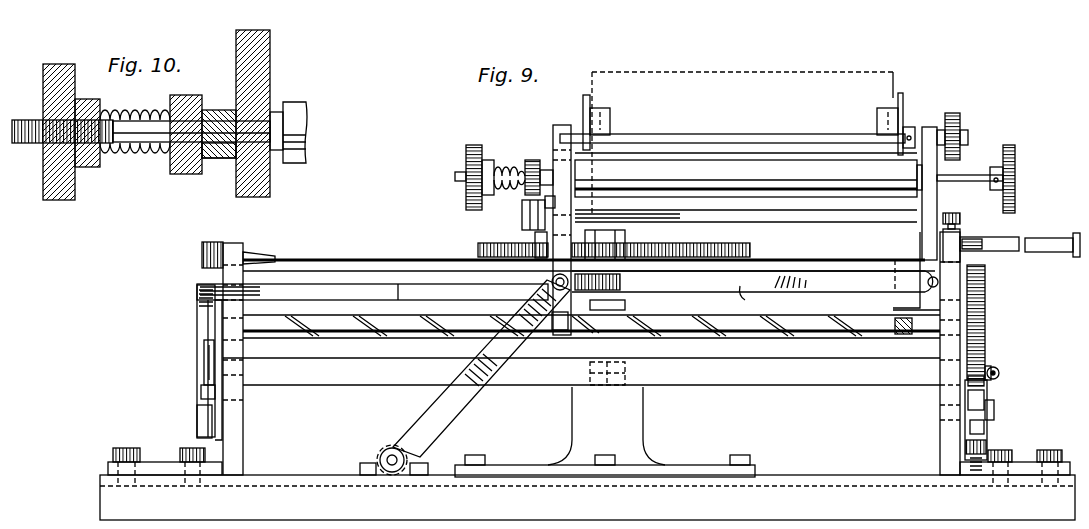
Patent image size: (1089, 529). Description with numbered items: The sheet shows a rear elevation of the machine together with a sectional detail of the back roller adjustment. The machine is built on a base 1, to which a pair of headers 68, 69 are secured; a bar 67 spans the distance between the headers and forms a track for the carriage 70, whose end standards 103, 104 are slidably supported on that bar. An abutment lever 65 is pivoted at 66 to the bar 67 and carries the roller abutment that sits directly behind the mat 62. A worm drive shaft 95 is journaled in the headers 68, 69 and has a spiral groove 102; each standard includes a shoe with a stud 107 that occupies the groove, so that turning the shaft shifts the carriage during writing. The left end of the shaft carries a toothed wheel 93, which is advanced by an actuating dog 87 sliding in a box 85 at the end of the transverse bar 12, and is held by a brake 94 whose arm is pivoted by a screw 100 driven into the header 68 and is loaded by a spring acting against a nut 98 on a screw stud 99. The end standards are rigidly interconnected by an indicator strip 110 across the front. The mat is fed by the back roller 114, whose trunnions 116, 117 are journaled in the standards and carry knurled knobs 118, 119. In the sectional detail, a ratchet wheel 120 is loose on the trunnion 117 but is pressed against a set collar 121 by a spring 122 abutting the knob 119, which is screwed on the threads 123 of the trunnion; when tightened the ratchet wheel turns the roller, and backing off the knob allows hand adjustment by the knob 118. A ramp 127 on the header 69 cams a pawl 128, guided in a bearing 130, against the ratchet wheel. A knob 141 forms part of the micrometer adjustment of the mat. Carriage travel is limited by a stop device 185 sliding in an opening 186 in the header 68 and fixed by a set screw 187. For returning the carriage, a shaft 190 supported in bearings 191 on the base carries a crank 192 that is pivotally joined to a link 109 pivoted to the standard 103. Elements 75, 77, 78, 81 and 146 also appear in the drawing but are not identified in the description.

In FIG. 9, the base 1 is at (843, 479).
In FIG. 9, the transverse bar 12 is at (830, 386).
In FIG. 9, the mat 62 is at (895, 76).
In FIG. 9, the abutment lever 65 is at (452, 297).
In FIG. 9, the pivot 66 is at (480, 249).
In FIG. 9, the bar 67 is at (803, 270).
In FIG. 9, the header 68 is at (940, 410).
In FIG. 9, the header 69 is at (243, 405).
In FIG. 9, the carriage 70 is at (808, 134).
In FIG. 9, the plate 75 is at (197, 329).
In FIG. 9, the lever 77 is at (197, 424).
In FIG. 9, the pawl 78 is at (201, 402).
In FIG. 9, the spring 81 is at (204, 380).
In FIG. 9, the box 85 is at (1000, 372).
In FIG. 9, the actuating dog 87 is at (995, 367).
In FIG. 9, the toothed wheel 93 is at (986, 293).
In FIG. 9, the brake 94 is at (990, 400).
In FIG. 9, the worm drive shaft 95 is at (705, 337).
In FIG. 9, the nut 98 is at (988, 446).
In FIG. 9, the screw stud 99 is at (988, 432).
In FIG. 9, the screw 100 is at (995, 416).
In FIG. 9, the spiral groove 102 is at (700, 315).
In FIG. 9, the end standard 103 is at (922, 242).
In FIG. 10, the end standard 104 is at (272, 55).
In FIG. 9, the end standard 104 is at (556, 125).
In FIG. 9, the stud 107 is at (562, 331).
In FIG. 9, the link 109 is at (756, 297).
In FIG. 9, the strip 110 is at (712, 224).
In FIG. 10, the back roller 114 is at (298, 104).
In FIG. 9, the back roller 114 is at (688, 162).
In FIG. 9, the trunnion 116 is at (967, 182).
In FIG. 10, the trunnion 117 is at (222, 110).
In FIG. 9, the trunnion 117 is at (460, 174).
In FIG. 9, the knurled knob 118 is at (1012, 170).
In FIG. 10, the knurled knob 119 is at (60, 66).
In FIG. 9, the knurled knob 119 is at (476, 145).
In FIG. 10, the ratchet wheel 120 is at (185, 96).
In FIG. 9, the ratchet wheel 120 is at (530, 160).
In FIG. 10, the set collar 121 is at (225, 160).
In FIG. 10, the spring 122 is at (140, 110).
In FIG. 9, the spring 122 is at (510, 167).
In FIG. 10, the threads 123 is at (38, 144).
In FIG. 9, the ramp 127 is at (220, 242).
In FIG. 9, the pawl 128 is at (535, 243).
In FIG. 9, the bearing 130 is at (524, 205).
In FIG. 9, the knob 141 is at (952, 113).
In FIG. 9, the bracket 146 is at (591, 110).
In FIG. 9, the stop device 185 is at (1010, 235).
In FIG. 9, the opening 186 is at (962, 256).
In FIG. 9, the set screw 187 is at (960, 219).
In FIG. 9, the shaft 190 is at (390, 455).
In FIG. 9, the bearings 191 is at (426, 469).
In FIG. 9, the crank 192 is at (475, 398).